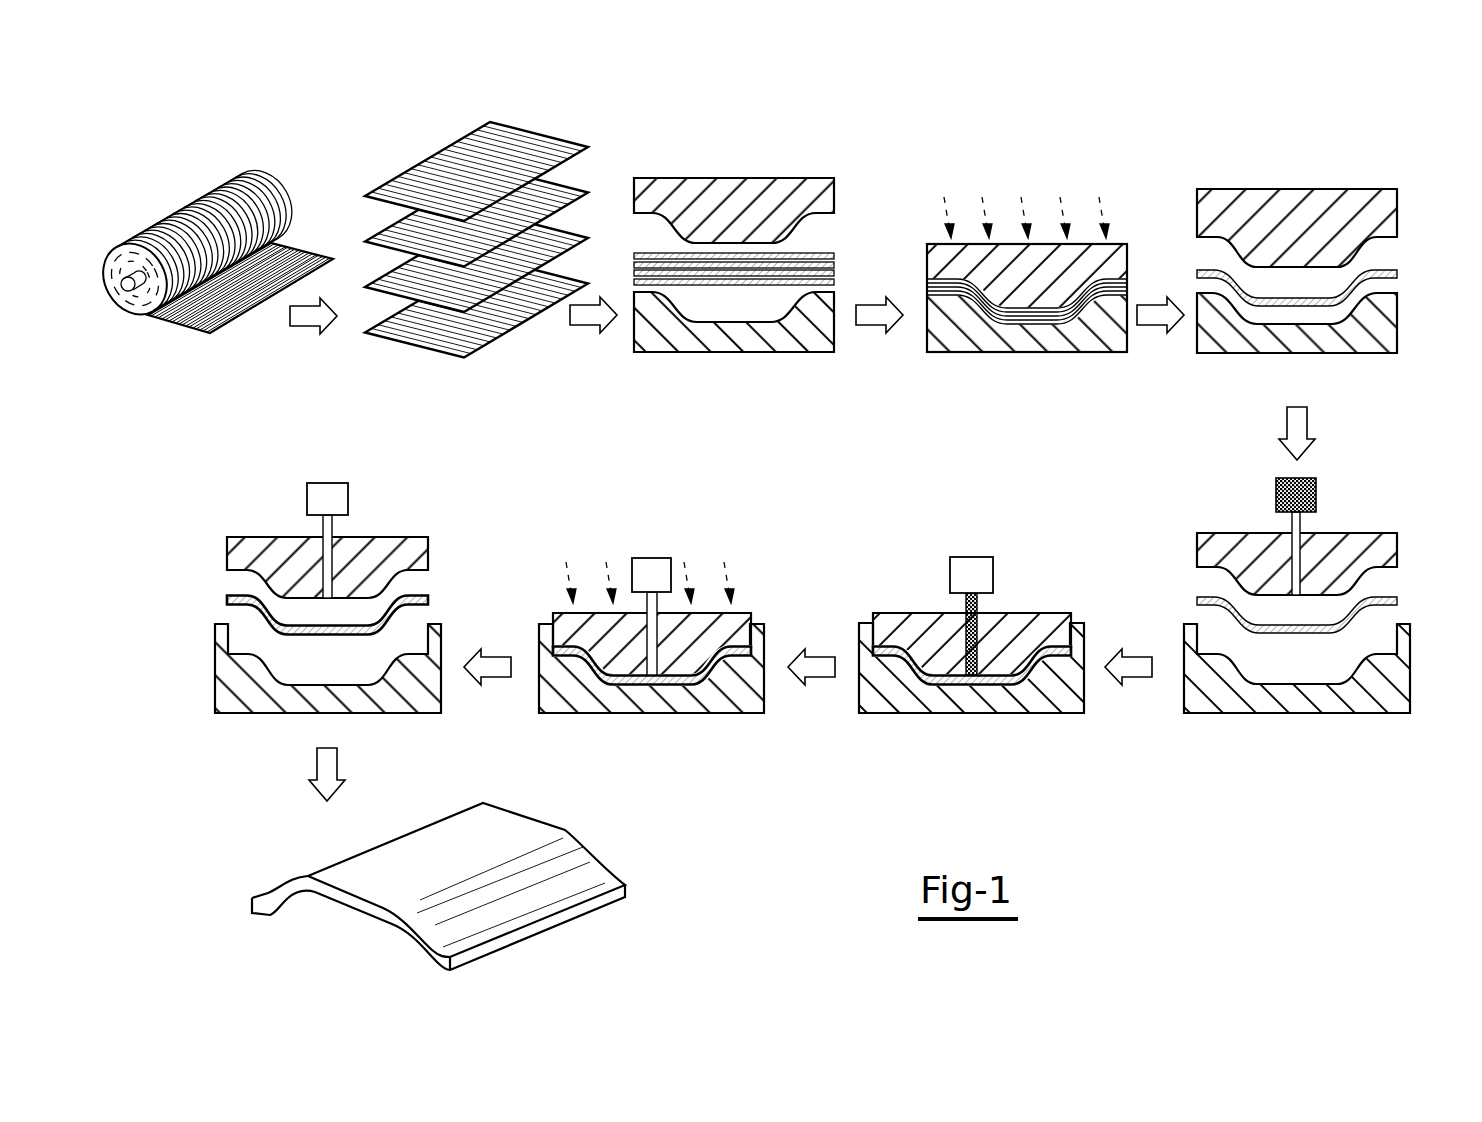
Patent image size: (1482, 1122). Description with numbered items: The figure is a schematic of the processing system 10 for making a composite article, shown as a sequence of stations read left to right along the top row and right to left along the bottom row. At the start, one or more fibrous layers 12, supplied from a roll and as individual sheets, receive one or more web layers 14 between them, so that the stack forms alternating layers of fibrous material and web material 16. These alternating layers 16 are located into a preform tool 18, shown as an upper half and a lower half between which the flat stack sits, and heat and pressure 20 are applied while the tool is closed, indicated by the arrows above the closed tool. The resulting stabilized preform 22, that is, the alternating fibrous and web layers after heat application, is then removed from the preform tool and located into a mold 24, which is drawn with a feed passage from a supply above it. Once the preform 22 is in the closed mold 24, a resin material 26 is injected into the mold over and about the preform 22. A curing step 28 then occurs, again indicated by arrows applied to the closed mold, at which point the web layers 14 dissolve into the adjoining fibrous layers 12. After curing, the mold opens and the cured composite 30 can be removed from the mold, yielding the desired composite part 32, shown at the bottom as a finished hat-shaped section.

The processing system 10 is at (253, 119).
The fibrous layers 12 is at (190, 194).
The web layers 14 is at (577, 282).
The alternating layers of fibrous material and web material 16 is at (822, 253).
The preform tool 18 is at (783, 178).
The heat and pressure 20 is at (1120, 244).
The stabilized preform 22 is at (1385, 271).
The mold 24 is at (1378, 533).
The resin material 26 is at (1032, 613).
The curing step 28 is at (740, 613).
The cured composite 30 is at (268, 537).
The composite part 32 is at (655, 838).